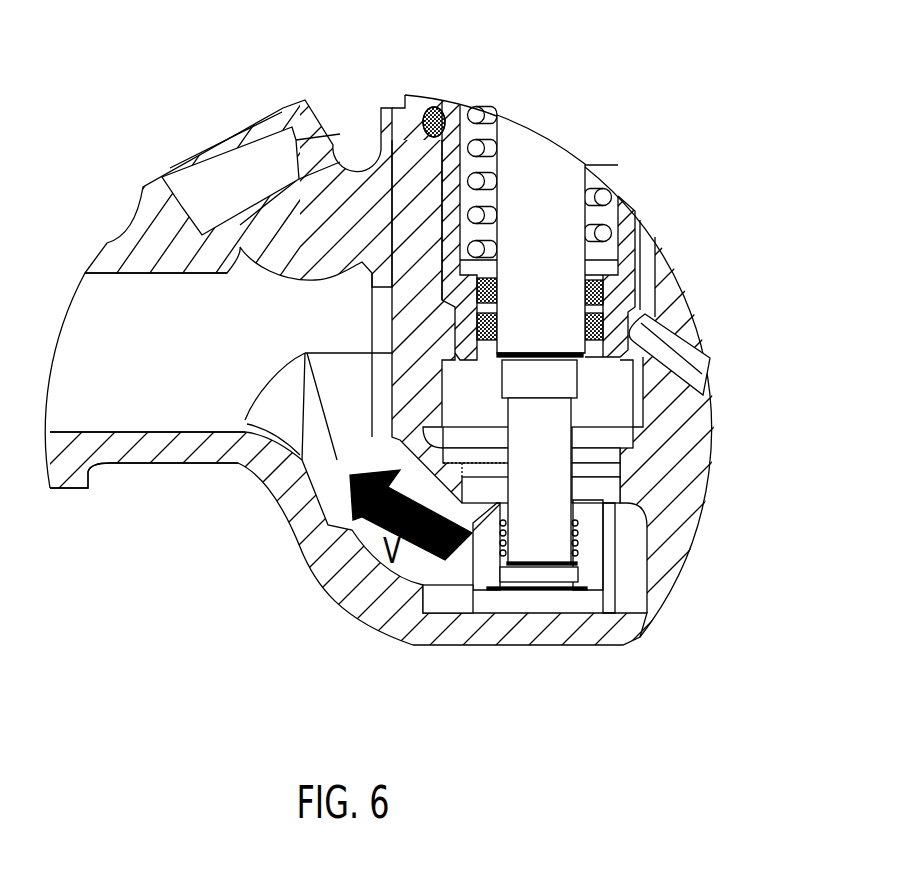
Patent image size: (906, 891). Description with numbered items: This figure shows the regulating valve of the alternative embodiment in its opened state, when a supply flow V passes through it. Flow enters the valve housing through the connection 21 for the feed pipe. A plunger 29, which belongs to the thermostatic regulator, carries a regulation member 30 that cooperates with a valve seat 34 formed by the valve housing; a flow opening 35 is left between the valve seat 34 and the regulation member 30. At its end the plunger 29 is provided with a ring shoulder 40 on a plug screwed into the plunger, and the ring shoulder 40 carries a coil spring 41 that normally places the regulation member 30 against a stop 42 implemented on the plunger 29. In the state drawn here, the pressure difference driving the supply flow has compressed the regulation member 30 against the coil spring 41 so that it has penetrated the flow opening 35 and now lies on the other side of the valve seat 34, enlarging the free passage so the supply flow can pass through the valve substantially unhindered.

The connection for a feed pipe 21 is at (85, 475).
The plunger 29 is at (558, 239).
The regulation member 30 is at (600, 500).
The valve seat 34 is at (625, 465).
The flow opening 35 is at (580, 503).
The ring shoulder 40 is at (580, 568).
The coil spring 41 is at (500, 555).
The stop 42 is at (558, 422).